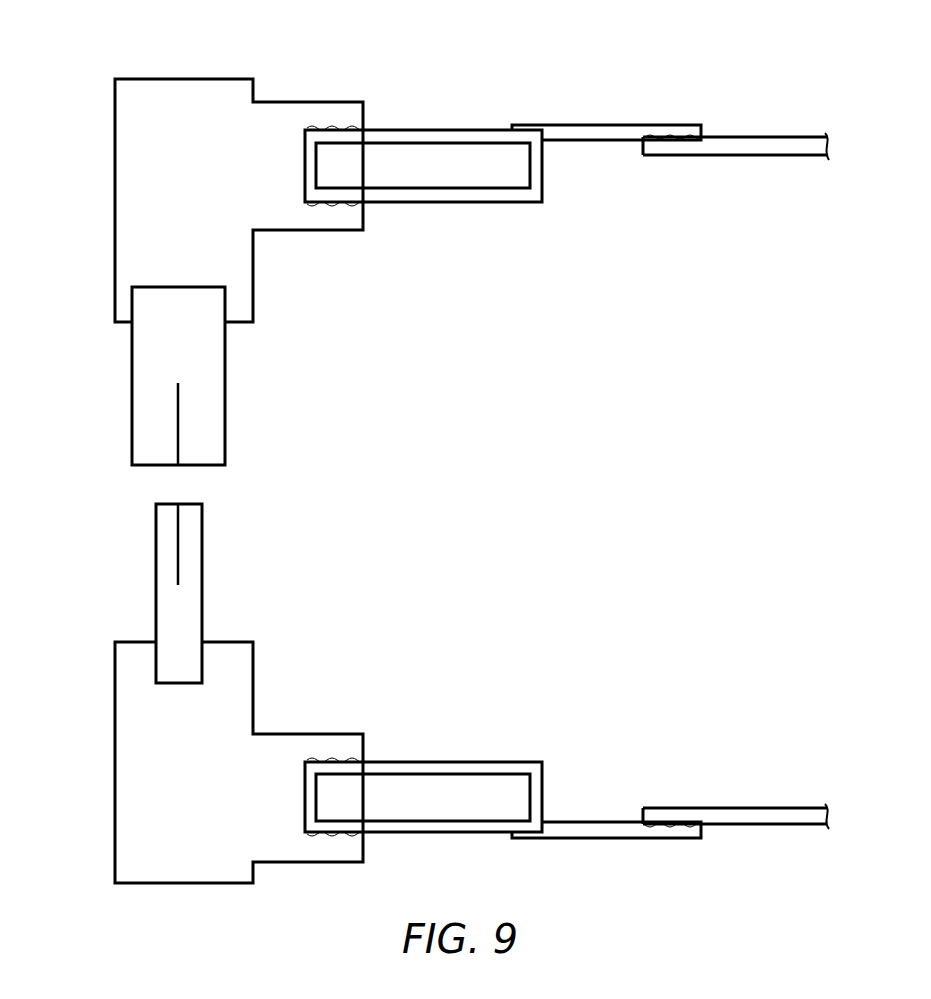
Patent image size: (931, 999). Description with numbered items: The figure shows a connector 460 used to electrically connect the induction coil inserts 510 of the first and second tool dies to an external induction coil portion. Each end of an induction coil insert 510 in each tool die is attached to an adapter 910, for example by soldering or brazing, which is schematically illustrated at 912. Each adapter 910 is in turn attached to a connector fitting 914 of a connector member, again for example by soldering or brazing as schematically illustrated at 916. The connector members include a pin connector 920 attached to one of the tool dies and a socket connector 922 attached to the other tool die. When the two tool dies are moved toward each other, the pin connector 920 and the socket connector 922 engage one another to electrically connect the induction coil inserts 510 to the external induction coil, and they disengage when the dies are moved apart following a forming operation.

The connector 460 is at (88, 484).
The connector fitting 914 is at (183, 79).
The soldering or brazing 916 is at (335, 128).
The adapter 910 is at (422, 130).
The soldering or brazing 912 is at (670, 124).
The induction coil insert 510 is at (772, 137).
The socket connector 922 is at (132, 392).
The pin connector 920 is at (156, 565).